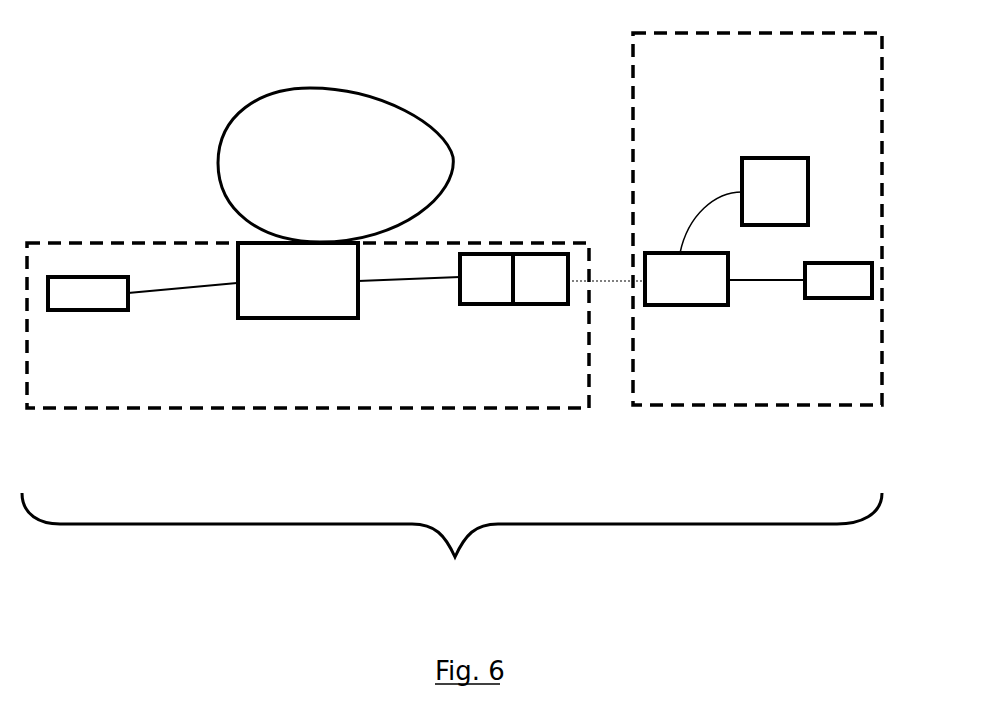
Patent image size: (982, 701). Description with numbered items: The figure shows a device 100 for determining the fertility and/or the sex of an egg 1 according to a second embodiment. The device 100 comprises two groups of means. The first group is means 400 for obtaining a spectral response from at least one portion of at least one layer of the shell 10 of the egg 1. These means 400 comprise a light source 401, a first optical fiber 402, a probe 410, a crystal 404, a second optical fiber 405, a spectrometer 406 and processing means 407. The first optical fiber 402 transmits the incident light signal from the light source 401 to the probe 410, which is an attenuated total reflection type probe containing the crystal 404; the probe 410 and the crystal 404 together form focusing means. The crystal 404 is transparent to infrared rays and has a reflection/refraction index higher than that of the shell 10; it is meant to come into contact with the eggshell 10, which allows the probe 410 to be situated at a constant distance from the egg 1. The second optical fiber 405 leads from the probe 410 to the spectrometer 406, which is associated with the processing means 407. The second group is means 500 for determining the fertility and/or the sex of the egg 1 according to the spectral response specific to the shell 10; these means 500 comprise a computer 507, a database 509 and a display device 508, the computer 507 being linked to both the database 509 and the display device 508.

The egg 1 is at (277, 112).
The shell 10 is at (447, 147).
The device 100 is at (452, 547).
The means for obtaining a spectral response 400 is at (352, 408).
The light source 401 is at (73, 310).
The first optical fiber 402 is at (163, 293).
The crystal 404 is at (300, 255).
The second optical fiber 405 is at (405, 283).
The spectrometer 406 is at (470, 304).
The processing means 407 is at (535, 304).
The probe 410 is at (270, 318).
The means for determining the fertility and/or the sex of the egg 500 is at (790, 405).
The computer 507 is at (672, 305).
The display device 508 is at (843, 298).
The database 509 is at (768, 155).